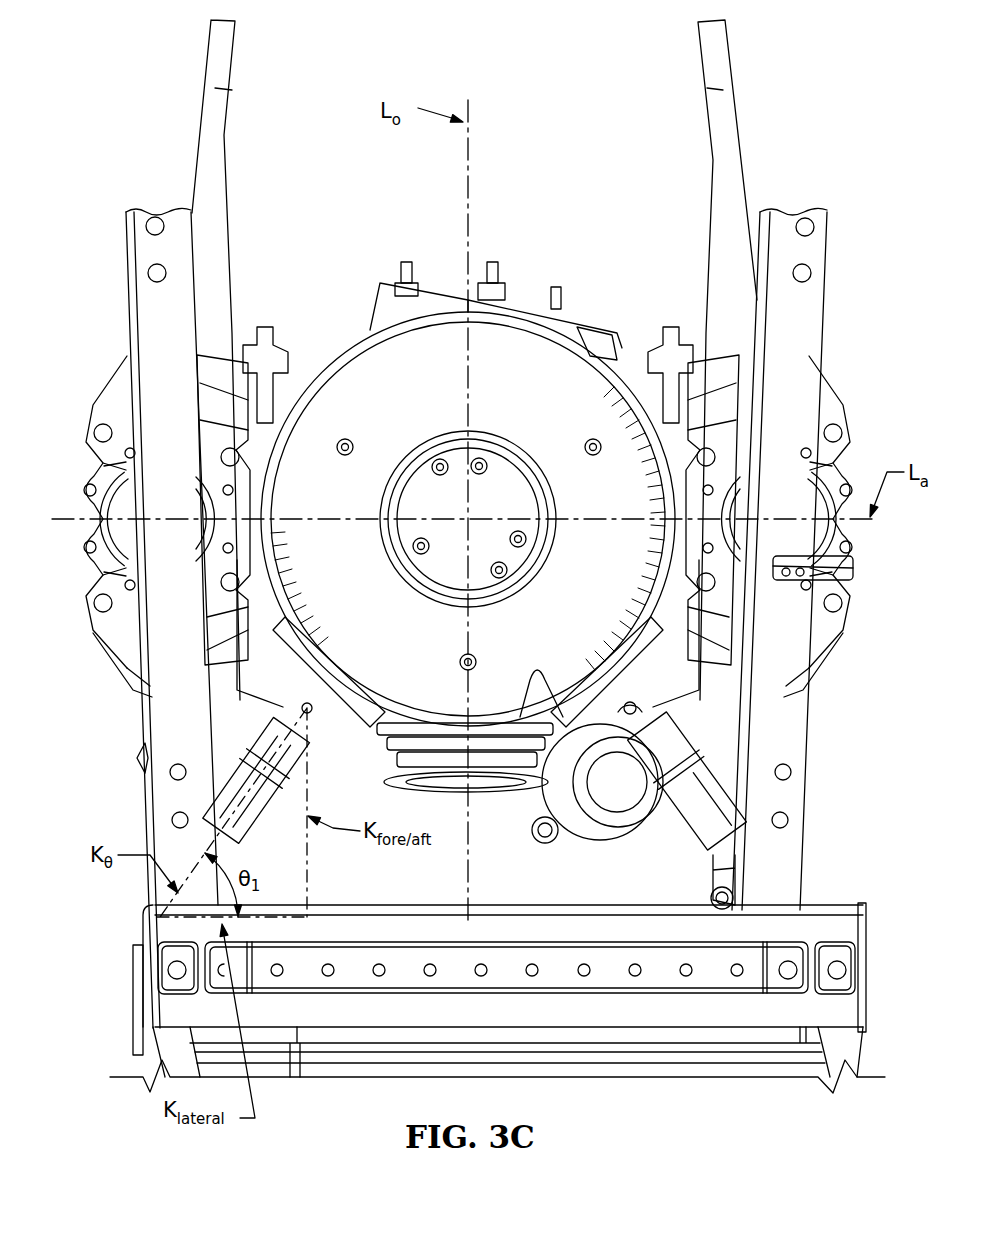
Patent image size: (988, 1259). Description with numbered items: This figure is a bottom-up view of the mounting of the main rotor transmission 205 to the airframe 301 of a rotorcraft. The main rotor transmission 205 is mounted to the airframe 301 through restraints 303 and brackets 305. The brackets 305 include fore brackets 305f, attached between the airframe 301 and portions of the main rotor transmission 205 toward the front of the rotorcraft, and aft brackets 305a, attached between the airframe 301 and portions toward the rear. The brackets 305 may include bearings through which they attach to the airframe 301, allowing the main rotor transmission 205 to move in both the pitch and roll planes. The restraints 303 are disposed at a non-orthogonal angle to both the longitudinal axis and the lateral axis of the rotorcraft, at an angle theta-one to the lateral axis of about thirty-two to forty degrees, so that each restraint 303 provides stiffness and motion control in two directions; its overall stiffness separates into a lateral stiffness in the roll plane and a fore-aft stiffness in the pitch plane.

The main rotor transmission 205 is at (522, 302).
The airframe 301 is at (148, 800).
The restraints 303 is at (693, 840).
The brackets 305 is at (90, 412).
The aft brackets 305a is at (108, 662).
The fore brackets 305f is at (197, 147).